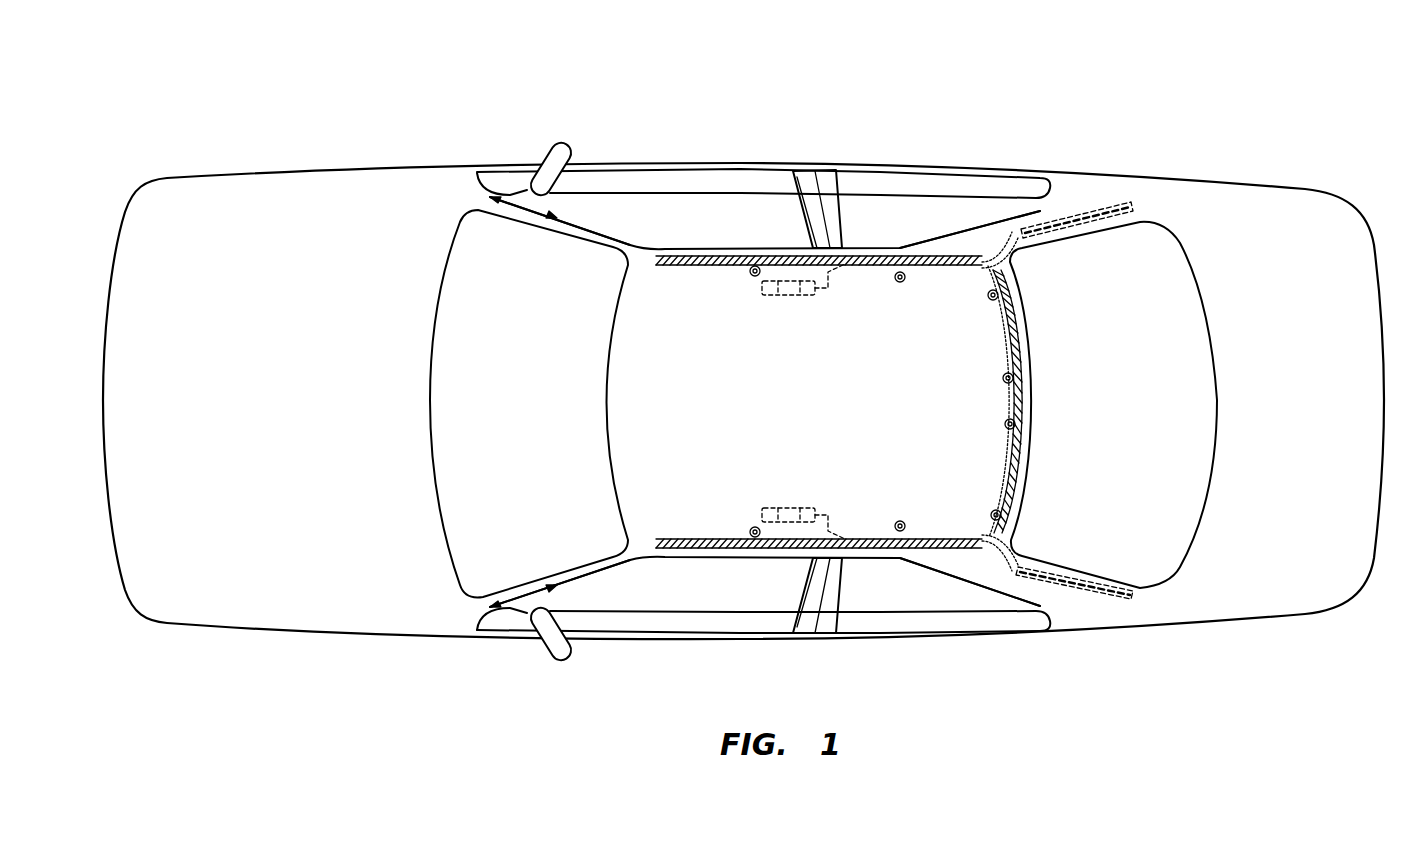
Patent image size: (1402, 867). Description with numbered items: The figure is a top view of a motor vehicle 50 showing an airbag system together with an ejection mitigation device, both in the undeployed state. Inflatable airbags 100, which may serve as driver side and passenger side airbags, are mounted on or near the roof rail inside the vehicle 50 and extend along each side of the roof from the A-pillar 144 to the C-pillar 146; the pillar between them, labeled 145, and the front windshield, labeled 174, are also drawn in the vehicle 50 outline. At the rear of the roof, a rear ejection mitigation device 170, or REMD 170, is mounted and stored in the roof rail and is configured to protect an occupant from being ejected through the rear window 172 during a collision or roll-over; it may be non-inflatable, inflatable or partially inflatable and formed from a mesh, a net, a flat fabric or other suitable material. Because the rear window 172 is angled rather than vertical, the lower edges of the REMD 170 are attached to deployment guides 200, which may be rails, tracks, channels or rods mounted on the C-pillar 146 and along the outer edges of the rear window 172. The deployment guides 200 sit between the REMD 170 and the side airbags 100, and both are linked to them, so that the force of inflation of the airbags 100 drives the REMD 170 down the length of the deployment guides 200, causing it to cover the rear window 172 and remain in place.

The vehicle 50 is at (315, 663).
The inflatable airbags 100 is at (940, 258).
The A-pillar 144 is at (590, 230).
The B-pillar 145 is at (829, 202).
The C-pillar 146 is at (1040, 212).
The rear ejection mitigation device 170 is at (1027, 408).
The rear window 172 is at (1160, 350).
The windshield 174 is at (482, 500).
The deployment guides 200 is at (1105, 210).